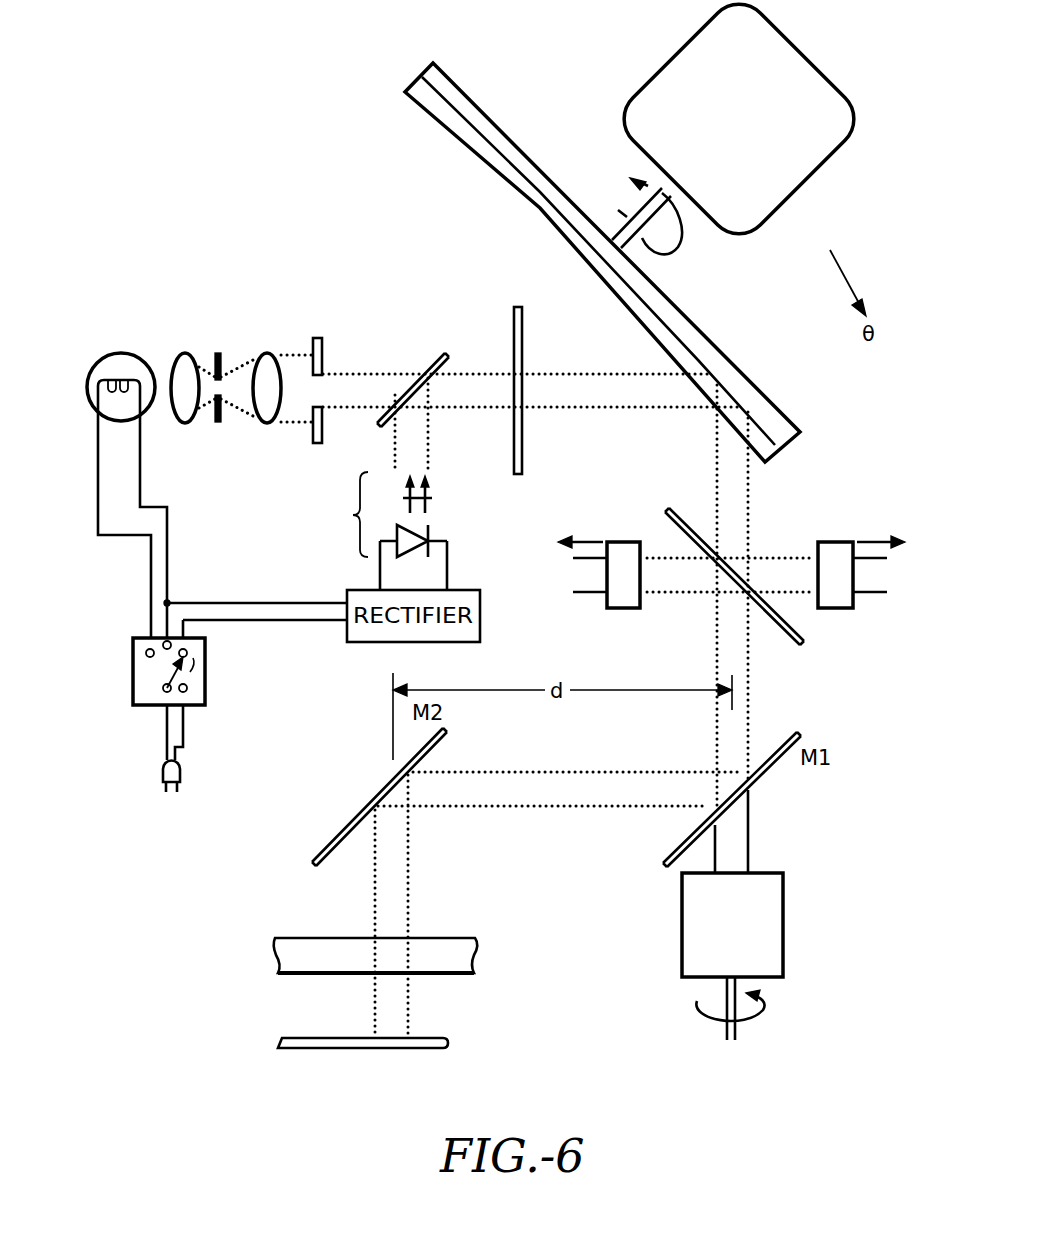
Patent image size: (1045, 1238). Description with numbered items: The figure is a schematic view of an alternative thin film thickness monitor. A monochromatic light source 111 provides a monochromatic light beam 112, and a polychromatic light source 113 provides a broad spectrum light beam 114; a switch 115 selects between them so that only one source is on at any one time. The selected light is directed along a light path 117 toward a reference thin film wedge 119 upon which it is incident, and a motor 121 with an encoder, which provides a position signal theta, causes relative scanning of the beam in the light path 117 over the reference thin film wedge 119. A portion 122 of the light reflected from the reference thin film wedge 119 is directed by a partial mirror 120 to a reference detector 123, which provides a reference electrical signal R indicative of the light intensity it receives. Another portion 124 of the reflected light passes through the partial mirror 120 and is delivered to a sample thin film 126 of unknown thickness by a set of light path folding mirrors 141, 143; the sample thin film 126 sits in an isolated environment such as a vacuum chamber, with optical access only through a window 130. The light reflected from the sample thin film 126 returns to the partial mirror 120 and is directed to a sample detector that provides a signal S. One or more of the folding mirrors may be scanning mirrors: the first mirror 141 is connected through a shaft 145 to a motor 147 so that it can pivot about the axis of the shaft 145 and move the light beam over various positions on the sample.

The monochromatic light source 111 is at (395, 531).
The monochromatic light beam 112 is at (427, 510).
The polychromatic light source 113 is at (118, 354).
The broad spectrum light beam 114 is at (223, 377).
The switch 115 is at (196, 667).
The light path 117 is at (562, 372).
The reference thin film wedge 119 is at (766, 440).
The partial mirror 120 is at (682, 513).
The motor 121 is at (780, 203).
The portion of reflected light 122 is at (781, 551).
The reference detector 123 is at (840, 550).
The light beam portion 124 is at (708, 615).
The sample thin film 126 is at (423, 1040).
The window 130 is at (290, 943).
The first mirror 141 is at (790, 735).
The mirror 143 is at (442, 740).
The shaft 145 is at (750, 832).
The motor 147 is at (763, 922).